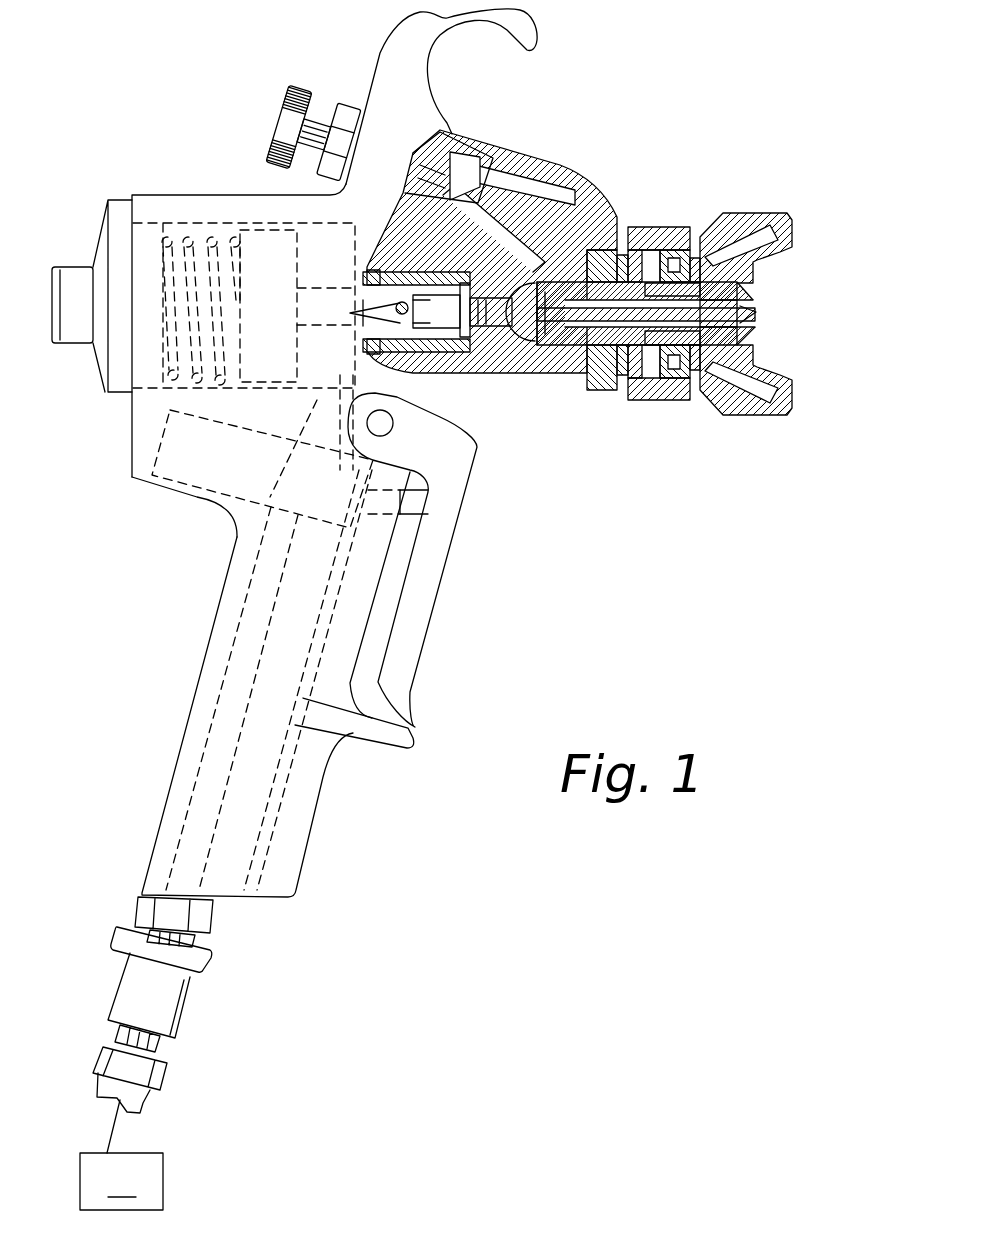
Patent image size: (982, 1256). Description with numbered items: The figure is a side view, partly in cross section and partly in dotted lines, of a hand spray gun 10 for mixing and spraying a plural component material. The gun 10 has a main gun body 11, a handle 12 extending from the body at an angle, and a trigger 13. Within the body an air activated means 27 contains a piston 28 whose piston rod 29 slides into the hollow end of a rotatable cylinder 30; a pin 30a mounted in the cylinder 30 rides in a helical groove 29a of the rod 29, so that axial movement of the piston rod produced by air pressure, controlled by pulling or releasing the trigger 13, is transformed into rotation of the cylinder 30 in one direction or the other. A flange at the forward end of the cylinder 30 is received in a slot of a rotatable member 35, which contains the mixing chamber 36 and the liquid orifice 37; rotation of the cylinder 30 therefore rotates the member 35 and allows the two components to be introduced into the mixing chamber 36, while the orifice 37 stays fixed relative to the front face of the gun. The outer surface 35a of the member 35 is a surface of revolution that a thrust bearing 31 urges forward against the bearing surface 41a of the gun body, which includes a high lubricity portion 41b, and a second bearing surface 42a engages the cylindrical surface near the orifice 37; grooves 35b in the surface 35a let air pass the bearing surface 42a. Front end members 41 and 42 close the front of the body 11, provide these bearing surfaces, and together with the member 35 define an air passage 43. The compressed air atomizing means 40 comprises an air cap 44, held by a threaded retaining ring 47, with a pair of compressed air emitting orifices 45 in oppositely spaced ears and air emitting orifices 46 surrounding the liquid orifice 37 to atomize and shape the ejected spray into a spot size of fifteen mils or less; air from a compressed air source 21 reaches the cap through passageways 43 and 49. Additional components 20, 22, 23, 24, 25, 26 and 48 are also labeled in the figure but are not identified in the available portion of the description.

The hand spray gun 10 is at (142, 548).
The main gun body 11 is at (470, 133).
The handle 12 is at (192, 703).
The trigger 13 is at (420, 652).
The fluid supply hose 20 is at (150, 1103).
The compressed air source 21 is at (121, 1155).
The hose coupling nut 22 is at (165, 1077).
The inlet fitting 23 is at (208, 963).
The trigger pivot pin 24 is at (460, 453).
The actuating pin 25 is at (398, 530).
The fluid passage 26 is at (237, 540).
The air activated means 27 is at (200, 229).
The piston 28 is at (253, 228).
The piston rod 29 is at (320, 287).
The helical groove 29a is at (380, 303).
The rotatable cylinder 30 is at (467, 337).
The pin 30a is at (433, 337).
The thrust bearing 31 is at (392, 257).
The rotatable member 35 is at (530, 343).
The outer surface 35a is at (543, 357).
The grooves 35b is at (757, 323).
The mixing chamber 36 is at (662, 350).
The liquid orifice 37 is at (760, 312).
The compressed air atomizing means 40 is at (781, 444).
The front end member 41 is at (627, 247).
The bearing surface 41a is at (585, 262).
The high lubricity portion 41b is at (588, 390).
The front end member 42 is at (660, 243).
The bearing surface 42a is at (725, 385).
The air passage 43 is at (695, 393).
The air cap 44 is at (747, 213).
The compressed air emitting orifices 45 is at (780, 252).
The air emitting orifices 46 is at (760, 277).
The threaded retaining ring 47 is at (682, 243).
The valve sleeve 48 is at (498, 337).
The passageway 49 is at (505, 180).